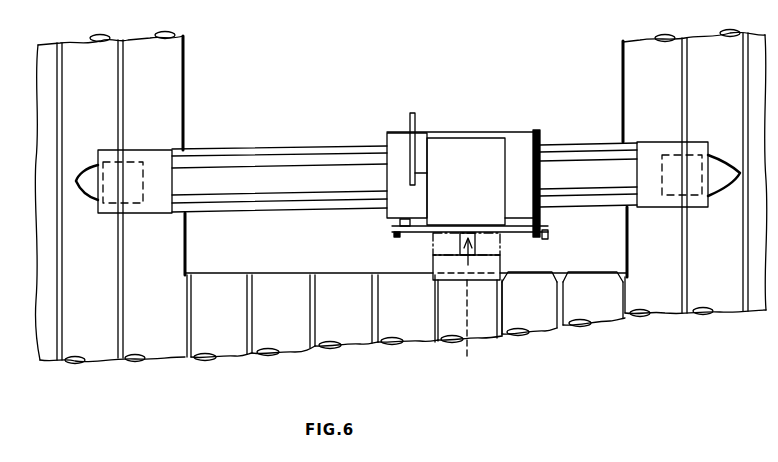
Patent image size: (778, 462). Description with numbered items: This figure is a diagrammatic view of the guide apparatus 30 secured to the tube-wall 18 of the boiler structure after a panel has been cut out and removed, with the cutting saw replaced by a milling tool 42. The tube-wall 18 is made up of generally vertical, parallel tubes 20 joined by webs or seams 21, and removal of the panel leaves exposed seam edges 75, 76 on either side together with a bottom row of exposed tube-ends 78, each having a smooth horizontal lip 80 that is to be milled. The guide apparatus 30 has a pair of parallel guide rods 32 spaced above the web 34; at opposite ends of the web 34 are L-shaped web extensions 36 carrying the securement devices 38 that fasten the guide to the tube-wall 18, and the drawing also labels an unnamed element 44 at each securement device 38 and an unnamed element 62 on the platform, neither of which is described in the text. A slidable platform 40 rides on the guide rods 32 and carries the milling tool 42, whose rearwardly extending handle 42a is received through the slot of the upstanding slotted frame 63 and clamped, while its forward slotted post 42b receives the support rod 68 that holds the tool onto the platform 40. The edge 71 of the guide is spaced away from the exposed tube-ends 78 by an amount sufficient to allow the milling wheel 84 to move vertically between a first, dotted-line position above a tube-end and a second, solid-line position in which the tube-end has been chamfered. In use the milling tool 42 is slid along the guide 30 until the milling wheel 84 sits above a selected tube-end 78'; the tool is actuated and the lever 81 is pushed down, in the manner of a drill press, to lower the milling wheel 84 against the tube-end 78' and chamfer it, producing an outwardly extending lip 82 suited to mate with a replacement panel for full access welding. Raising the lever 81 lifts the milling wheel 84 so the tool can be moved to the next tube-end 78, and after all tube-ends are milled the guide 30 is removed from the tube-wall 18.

The tube-wall 18 is at (128, 383).
The tubes 20 is at (225, 338).
The webs or seams 21 is at (188, 362).
The guide apparatus 30 is at (404, 144).
The guide rods 32 is at (232, 197).
The web 34 is at (255, 148).
The L-shaped web extensions 36 is at (100, 150).
The securement devices 38 is at (85, 215).
The slidable platform 40 is at (538, 129).
The milling tool 42 is at (474, 178).
The handle 42a is at (549, 233).
The slotted post 42b is at (397, 240).
The gripper tip 44 is at (86, 175).
The drive housing 62 is at (395, 140).
The slotted frame 63 is at (545, 178).
The support rod 68 is at (392, 224).
The edge 71 is at (258, 215).
The seam edge 75 is at (622, 52).
The seam edge 76 is at (187, 48).
The exposed tube-ends 78 is at (221, 294).
The selected tube-end 78' is at (468, 333).
The lips 80 is at (277, 273).
The lever 81 is at (416, 120).
The outwardly extending lips 82 is at (590, 275).
The milling wheel 84 is at (501, 263).